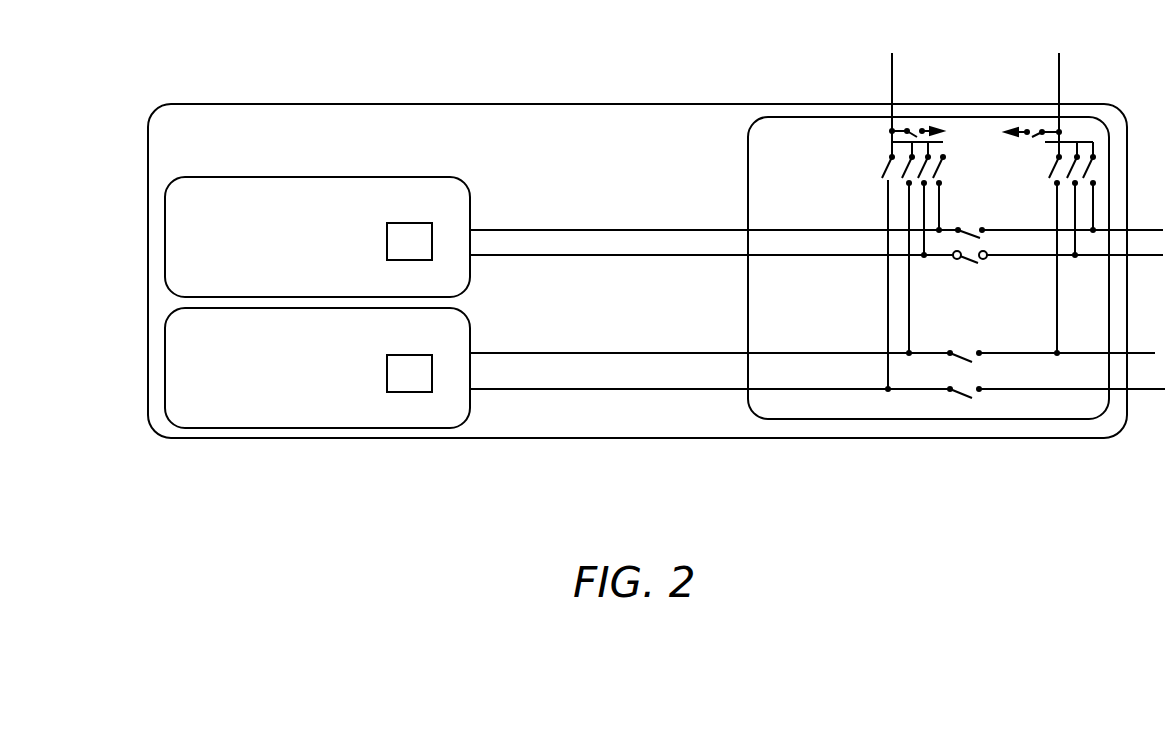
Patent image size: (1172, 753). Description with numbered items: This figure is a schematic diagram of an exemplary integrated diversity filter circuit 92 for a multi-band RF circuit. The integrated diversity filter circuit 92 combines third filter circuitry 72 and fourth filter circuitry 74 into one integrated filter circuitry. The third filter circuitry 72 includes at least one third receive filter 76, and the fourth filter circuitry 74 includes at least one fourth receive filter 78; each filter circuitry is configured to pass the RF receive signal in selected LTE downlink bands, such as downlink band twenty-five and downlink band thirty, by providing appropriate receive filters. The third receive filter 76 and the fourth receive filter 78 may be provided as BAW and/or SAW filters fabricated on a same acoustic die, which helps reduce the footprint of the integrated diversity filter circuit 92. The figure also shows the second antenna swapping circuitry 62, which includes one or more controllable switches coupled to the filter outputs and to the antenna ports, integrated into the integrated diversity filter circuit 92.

The integrated diversity filter circuit 92 is at (295, 139).
The third filter circuitry 72 is at (295, 249).
The fourth filter circuitry 74 is at (295, 381).
The third receive filter 76 is at (396, 254).
The fourth receive filter 78 is at (396, 384).
The second antenna swapping circuitry 62 is at (762, 147).